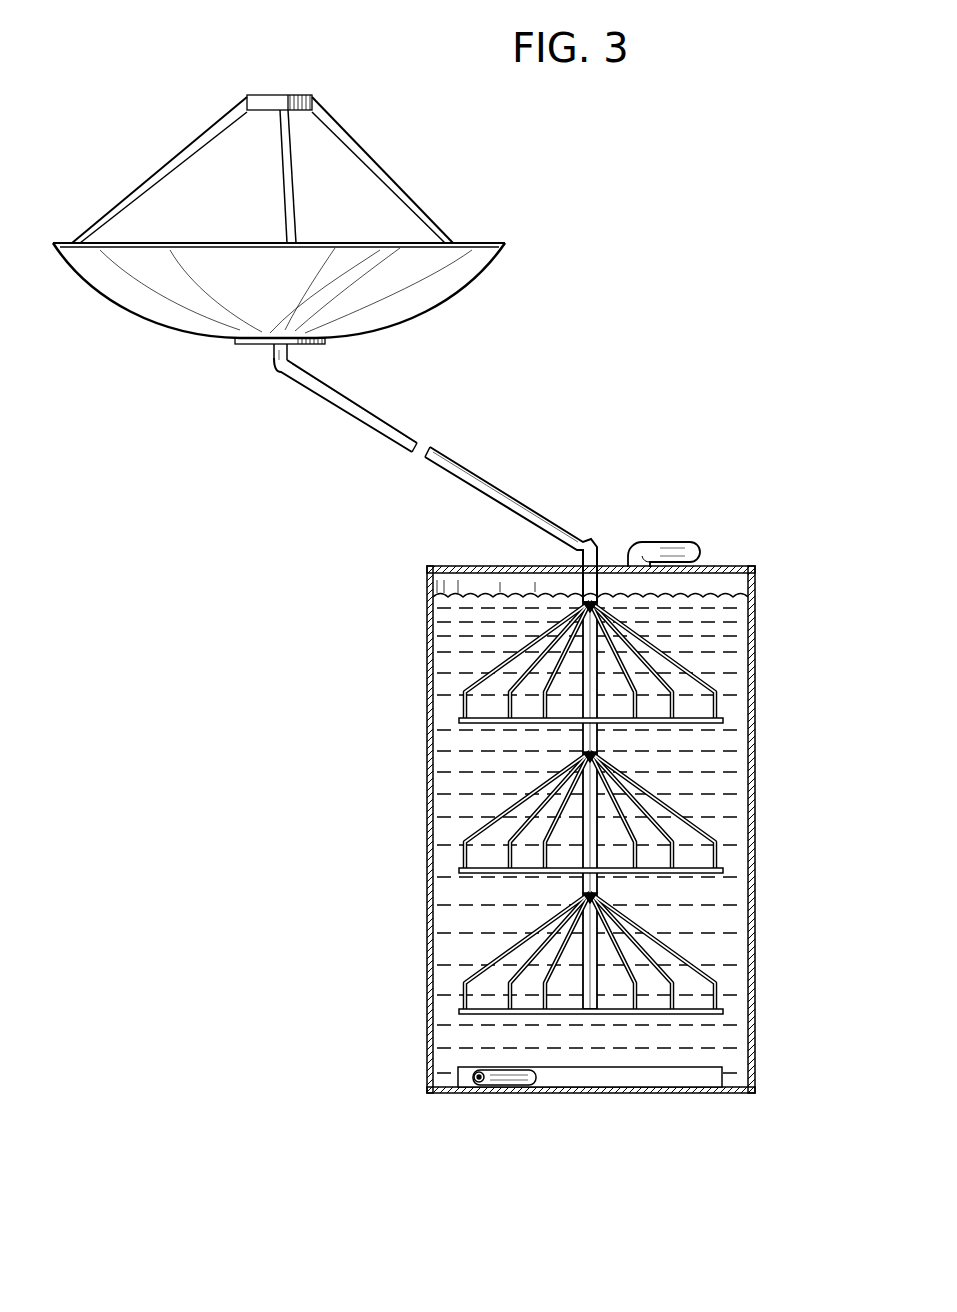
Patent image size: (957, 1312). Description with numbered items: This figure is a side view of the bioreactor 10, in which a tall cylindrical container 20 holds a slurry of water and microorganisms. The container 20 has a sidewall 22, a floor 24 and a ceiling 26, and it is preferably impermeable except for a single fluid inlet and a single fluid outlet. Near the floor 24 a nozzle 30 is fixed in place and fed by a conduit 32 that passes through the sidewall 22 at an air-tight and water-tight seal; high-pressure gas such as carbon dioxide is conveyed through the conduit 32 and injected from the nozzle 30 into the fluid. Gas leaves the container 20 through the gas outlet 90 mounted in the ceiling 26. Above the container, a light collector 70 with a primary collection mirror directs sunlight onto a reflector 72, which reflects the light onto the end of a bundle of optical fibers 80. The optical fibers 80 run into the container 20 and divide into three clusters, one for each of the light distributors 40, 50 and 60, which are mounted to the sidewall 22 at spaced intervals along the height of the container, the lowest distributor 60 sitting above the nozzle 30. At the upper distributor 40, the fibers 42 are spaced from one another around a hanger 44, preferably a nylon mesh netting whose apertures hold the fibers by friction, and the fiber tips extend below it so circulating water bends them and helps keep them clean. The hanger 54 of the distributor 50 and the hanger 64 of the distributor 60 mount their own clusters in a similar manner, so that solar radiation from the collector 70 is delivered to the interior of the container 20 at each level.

The bioreactor 10 is at (635, 222).
The container 20 is at (393, 776).
The sidewall 22 is at (427, 647).
The floor 24 is at (452, 1088).
The ceiling 26 is at (468, 566).
The nozzle 30 is at (544, 1083).
The conduit 32 is at (515, 1083).
The light distributor 40 is at (580, 660).
The fibers 42 is at (690, 672).
The hanger 44 is at (727, 720).
The light distributor 50 is at (455, 857).
The hanger 54 is at (727, 869).
The light distributor 60 is at (455, 984).
The hanger 64 is at (727, 1010).
The light collector 70 is at (472, 278).
The reflector 72 is at (287, 95).
The optical fibers 80 is at (450, 458).
The gas outlet 90 is at (667, 542).